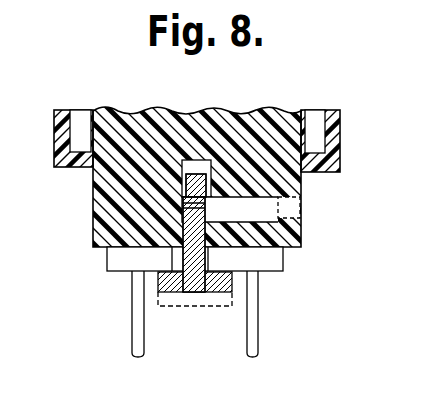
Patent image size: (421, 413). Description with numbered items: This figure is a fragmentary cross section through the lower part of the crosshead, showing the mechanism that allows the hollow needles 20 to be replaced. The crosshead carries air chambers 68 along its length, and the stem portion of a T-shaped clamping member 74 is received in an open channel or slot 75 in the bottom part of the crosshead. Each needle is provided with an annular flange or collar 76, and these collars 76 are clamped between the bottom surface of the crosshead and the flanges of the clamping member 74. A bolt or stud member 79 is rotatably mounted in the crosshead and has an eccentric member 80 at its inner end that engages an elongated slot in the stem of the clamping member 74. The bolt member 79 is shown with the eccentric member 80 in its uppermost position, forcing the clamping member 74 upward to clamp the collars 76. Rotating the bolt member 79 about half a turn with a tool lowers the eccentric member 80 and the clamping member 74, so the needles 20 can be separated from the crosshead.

The hollow needles 20 is at (133, 353).
The air chambers 68 is at (78, 133).
The clamping member 74 is at (228, 282).
The open channel or slot 75 is at (198, 166).
The annular flange or collar 76 is at (117, 266).
The bolt or stud member 79 is at (303, 195).
The eccentric member 80 is at (184, 206).